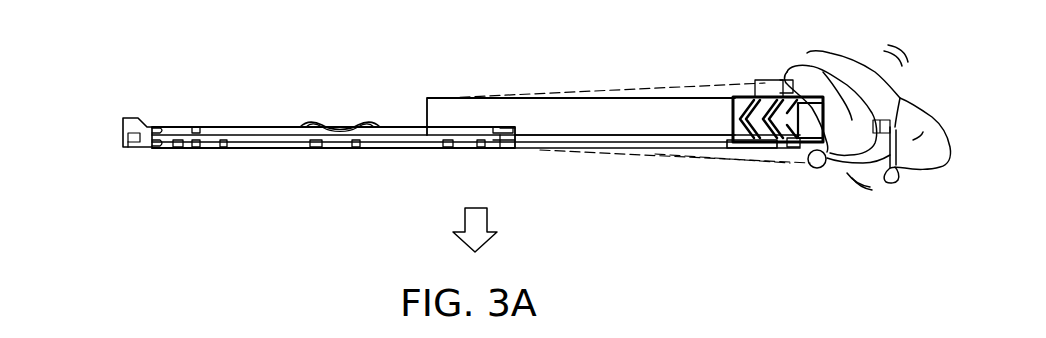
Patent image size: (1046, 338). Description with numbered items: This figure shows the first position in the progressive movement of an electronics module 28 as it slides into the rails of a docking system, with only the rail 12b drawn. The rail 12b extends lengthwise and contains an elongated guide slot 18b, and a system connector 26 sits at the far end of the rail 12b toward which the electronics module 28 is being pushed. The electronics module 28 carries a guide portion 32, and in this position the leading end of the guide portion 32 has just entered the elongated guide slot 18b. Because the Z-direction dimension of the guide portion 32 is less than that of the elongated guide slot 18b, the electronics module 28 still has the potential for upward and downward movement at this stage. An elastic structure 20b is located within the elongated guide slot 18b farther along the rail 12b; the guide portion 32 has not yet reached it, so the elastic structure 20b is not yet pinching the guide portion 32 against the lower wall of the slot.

The system connector 26 is at (123, 126).
The rail 12b is at (295, 150).
The elongated guide slot 18b is at (383, 150).
The elastic structure 20b is at (336, 118).
The electronics module 28 is at (574, 110).
The guide portion 32 is at (685, 155).